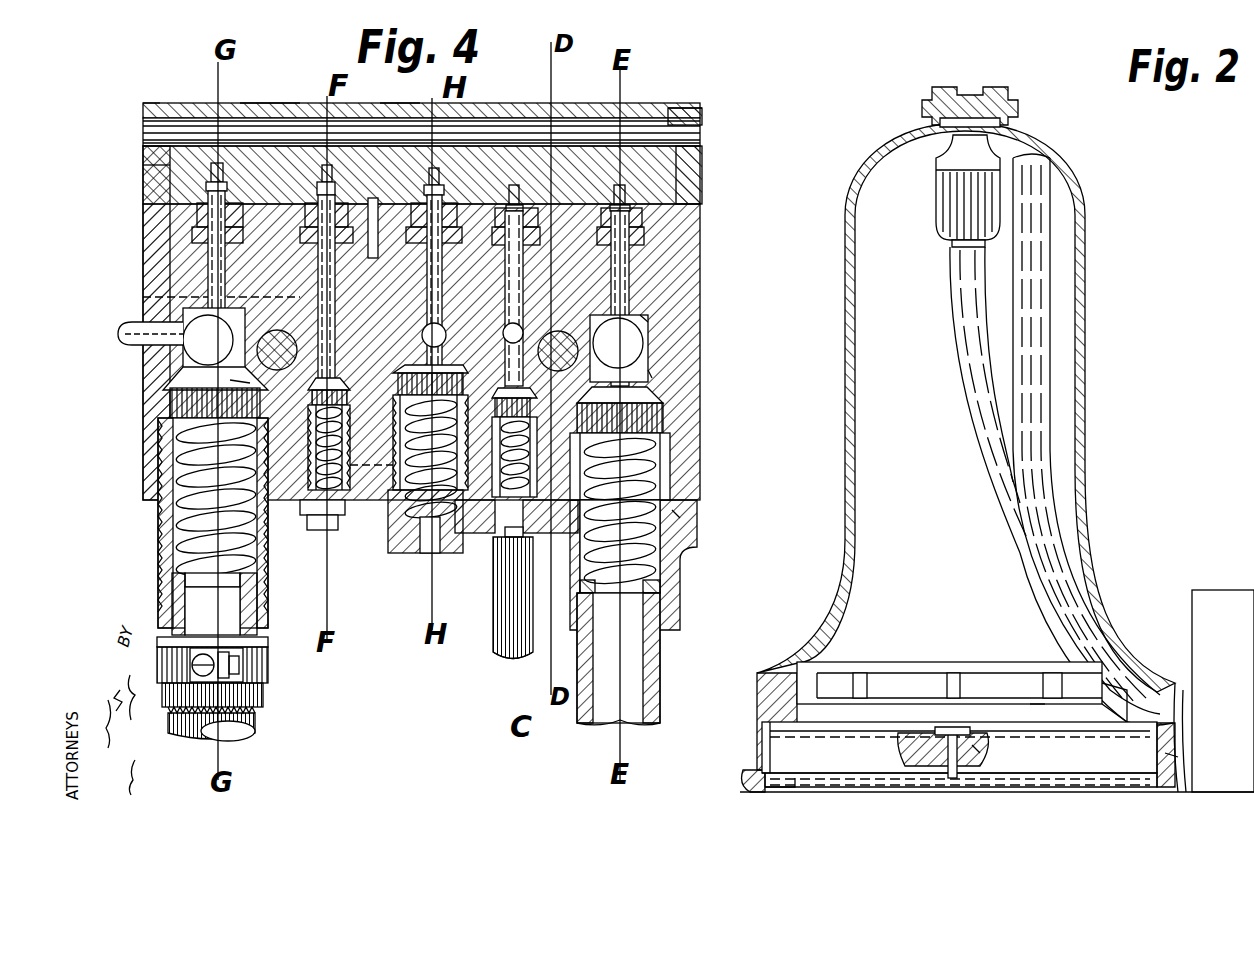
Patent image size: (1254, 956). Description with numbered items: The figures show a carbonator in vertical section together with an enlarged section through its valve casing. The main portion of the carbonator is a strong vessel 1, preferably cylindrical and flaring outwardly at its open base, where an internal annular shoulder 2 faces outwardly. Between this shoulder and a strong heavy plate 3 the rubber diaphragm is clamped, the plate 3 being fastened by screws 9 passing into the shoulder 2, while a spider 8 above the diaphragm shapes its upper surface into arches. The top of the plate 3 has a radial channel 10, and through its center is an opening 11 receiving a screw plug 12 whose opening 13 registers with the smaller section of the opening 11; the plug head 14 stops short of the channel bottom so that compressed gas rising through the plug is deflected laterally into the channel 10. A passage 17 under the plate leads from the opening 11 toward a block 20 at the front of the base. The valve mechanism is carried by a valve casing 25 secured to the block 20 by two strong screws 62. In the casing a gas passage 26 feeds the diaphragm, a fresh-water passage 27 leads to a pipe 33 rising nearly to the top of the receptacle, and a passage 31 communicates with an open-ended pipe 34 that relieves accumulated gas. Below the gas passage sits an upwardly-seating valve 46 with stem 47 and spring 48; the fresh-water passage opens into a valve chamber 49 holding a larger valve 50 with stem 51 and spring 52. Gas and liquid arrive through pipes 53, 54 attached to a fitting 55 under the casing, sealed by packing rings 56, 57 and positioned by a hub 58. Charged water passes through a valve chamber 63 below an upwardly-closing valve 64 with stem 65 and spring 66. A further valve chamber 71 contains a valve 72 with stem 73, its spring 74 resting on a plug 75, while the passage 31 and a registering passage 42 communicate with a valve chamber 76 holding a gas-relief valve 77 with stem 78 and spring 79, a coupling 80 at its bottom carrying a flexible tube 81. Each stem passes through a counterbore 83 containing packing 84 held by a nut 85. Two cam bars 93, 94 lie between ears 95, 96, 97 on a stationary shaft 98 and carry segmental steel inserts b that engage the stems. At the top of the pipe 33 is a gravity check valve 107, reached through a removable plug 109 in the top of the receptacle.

In FIG. 2, the vessel 1 is at (1082, 340).
In FIG. 2, the internal annular shoulder 2 is at (770, 704).
In FIG. 2, the plate 3 is at (893, 752).
In FIG. 2, the spider 8 is at (920, 664).
In FIG. 2, the screws 9 is at (790, 788).
In FIG. 2, the radial channel 10 is at (1037, 708).
In FIG. 2, the opening 11 is at (975, 750).
In FIG. 2, the screw plug 12 is at (940, 762).
In FIG. 2, the opening 13 is at (954, 770).
In FIG. 2, the head 14 is at (955, 742).
In FIG. 2, the passage 17 is at (1092, 775).
In FIG. 2, the block 20 is at (1170, 757).
In FIG. 2, the valve casing 25 is at (1210, 794).
In FIG. 4, the gas passage 26 is at (635, 318).
In FIG. 4, the fresh-water passage 27 is at (640, 343).
In FIG. 4, the passage 31 is at (183, 324).
In FIG. 2, the fresh-water pipe 33 is at (962, 362).
In FIG. 2, the open-ended pipe 34 is at (1040, 250).
In FIG. 4, the passage 42 is at (165, 485).
In FIG. 4, the valve 46 is at (655, 392).
In FIG. 4, the stem 47 is at (545, 252).
In FIG. 4, the spring 48 is at (670, 442).
In FIG. 4, the valve chamber 49 is at (652, 374).
In FIG. 4, the valve 50 is at (663, 418).
In FIG. 4, the stem 51 is at (648, 318).
In FIG. 4, the spring 52 is at (668, 492).
In FIG. 4, the pipe 53 is at (500, 635).
In FIG. 4, the pipe 54 is at (640, 655).
In FIG. 4, the fitting 55 is at (685, 578).
In FIG. 4, the packing ring 56 is at (488, 530).
In FIG. 4, the packing ring 57 is at (678, 515).
In FIG. 4, the hub 58 is at (672, 503).
In FIG. 4, the screws 62 is at (582, 354).
In FIG. 4, the valve chamber 63 is at (360, 500).
In FIG. 4, the valve 64 is at (457, 525).
In FIG. 4, the stem 65 is at (437, 330).
In FIG. 4, the spring 66 is at (400, 540).
In FIG. 4, the valve chamber 71 is at (230, 412).
In FIG. 4, the valve 72 is at (260, 425).
In FIG. 4, the stem 73 is at (337, 284).
In FIG. 4, the spring 74 is at (310, 501).
In FIG. 4, the plug 75 is at (324, 522).
In FIG. 4, the valve chamber 76 is at (175, 378).
In FIG. 4, the valve 77 is at (240, 383).
In FIG. 4, the stem 78 is at (214, 228).
In FIG. 4, the spring 79 is at (178, 578).
In FIG. 4, the coupling 80 is at (172, 610).
In FIG. 4, the flexible tube 81 is at (170, 692).
In FIG. 4, the counterbore 83 is at (645, 228).
In FIG. 4, the packing 84 is at (240, 182).
In FIG. 4, the nut 85 is at (210, 172).
In FIG. 4, the cam bar 93 is at (652, 104).
In FIG. 4, the cam bar 94 is at (268, 104).
In FIG. 4, the ear 95 is at (700, 110).
In FIG. 4, the ear 96 is at (385, 108).
In FIG. 4, the ear 97 is at (158, 104).
In FIG. 4, the stationary shaft 98 is at (700, 126).
In FIG. 2, the check valve 107 is at (1002, 164).
In FIG. 2, the removable plug 109 is at (1008, 121).
In FIG. 4, the segmental steel inserts b is at (160, 168).